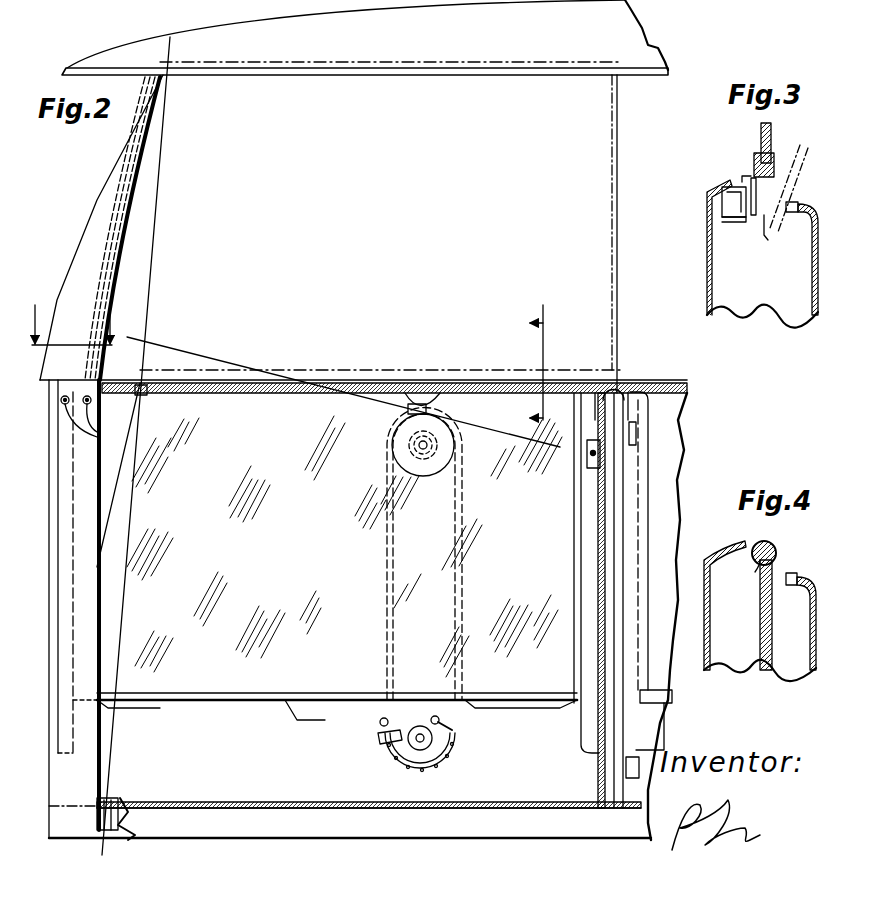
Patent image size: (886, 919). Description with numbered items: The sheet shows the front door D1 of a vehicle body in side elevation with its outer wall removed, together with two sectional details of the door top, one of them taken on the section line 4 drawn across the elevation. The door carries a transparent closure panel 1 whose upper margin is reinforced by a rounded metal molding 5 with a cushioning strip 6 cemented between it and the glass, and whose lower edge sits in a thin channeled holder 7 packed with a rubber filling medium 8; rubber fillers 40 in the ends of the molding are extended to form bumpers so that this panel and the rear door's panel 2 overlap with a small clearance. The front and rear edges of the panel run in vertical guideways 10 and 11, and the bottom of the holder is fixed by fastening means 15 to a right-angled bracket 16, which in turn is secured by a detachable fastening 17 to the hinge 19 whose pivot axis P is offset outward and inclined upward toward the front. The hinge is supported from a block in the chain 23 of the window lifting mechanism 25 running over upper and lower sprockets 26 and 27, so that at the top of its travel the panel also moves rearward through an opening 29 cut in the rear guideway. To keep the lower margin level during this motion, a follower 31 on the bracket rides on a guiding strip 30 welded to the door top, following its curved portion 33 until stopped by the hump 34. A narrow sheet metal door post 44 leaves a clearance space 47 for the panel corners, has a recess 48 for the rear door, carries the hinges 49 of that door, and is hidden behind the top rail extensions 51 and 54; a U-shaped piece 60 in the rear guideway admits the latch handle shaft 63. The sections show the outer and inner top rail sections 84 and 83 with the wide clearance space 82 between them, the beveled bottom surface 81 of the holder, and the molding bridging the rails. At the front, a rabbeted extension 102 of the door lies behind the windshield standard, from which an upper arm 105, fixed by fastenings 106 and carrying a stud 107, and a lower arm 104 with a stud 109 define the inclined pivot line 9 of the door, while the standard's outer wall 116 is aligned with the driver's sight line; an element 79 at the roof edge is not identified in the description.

In FIG. 2, the panel 1 is at (604, 178).
In FIG. 3, the panel 1 is at (773, 135).
In FIG. 4, the panel 1 is at (760, 620).
In FIG. 2, the panel 2 is at (672, 497).
In FIG. 2, the section line 4— 4 is at (536, 362).
In FIG. 2, the metal molding 5 is at (100, 207).
In FIG. 4, the metal molding 5 is at (775, 548).
In FIG. 4, the cushioning strip 6 is at (758, 572).
In FIG. 2, the channeled holder 7 is at (497, 380).
In FIG. 3, the channeled holder 7 is at (777, 165).
In FIG. 3, the filling medium 8 is at (756, 163).
In FIG. 2, the pivot line g—g 9 is at (134, 443).
In FIG. 2, the guideway 10 is at (66, 447).
In FIG. 2, the guideway 11 is at (581, 718).
In FIG. 3, the fastening means 15 is at (751, 178).
In FIG. 2, the right-angled bracket 16 is at (312, 722).
In FIG. 3, the right-angled bracket 16 is at (765, 228).
In FIG. 2, the detachable fastening 17 is at (380, 728).
In FIG. 2, the hinge 19 is at (386, 752).
In FIG. 2, the chain 23 is at (455, 748).
In FIG. 2, the window lifting mechanism 25 is at (390, 764).
In FIG. 2, the upper sprocket 26 is at (395, 455).
In FIG. 2, the lower sprocket 27 is at (428, 762).
In FIG. 2, the opening 29 is at (622, 400).
In FIG. 2, the guiding strip 30 is at (490, 402).
In FIG. 3, the guiding strip 30 is at (722, 200).
In FIG. 2, the follower 31 is at (462, 402).
In FIG. 3, the follower 31 is at (740, 220).
In FIG. 2, the curved portion 33 is at (420, 392).
In FIG. 2, the hump 34 is at (470, 394).
In FIG. 4, the rubber fillers 40 is at (778, 555).
In FIG. 2, the door post 44 is at (626, 768).
In FIG. 2, the clearance space 47 is at (618, 393).
In FIG. 2, the recess 48 is at (612, 487).
In FIG. 2, the hinges 49 is at (640, 430).
In FIG. 2, the top rail extension 51 is at (628, 395).
In FIG. 2, the top rail extension 54 is at (606, 385).
In FIG. 2, the U-shaped piece 60 is at (590, 466).
In FIG. 2, the latch handle shaft 63 is at (600, 490).
In FIG. 2, the lid 79 is at (626, 68).
In FIG. 2, the beveled surface 81 is at (160, 708).
In FIG. 4, the clearance space 82 is at (788, 580).
In FIG. 3, the inner section 83 is at (804, 209).
In FIG. 4, the inner section 83 is at (805, 578).
In FIG. 3, the outer section 84 is at (728, 182).
In FIG. 4, the outer section 84 is at (738, 541).
In FIG. 2, the extension 102 is at (50, 806).
In FIG. 2, the lower arm 104 is at (97, 838).
In FIG. 2, the upper arm 105 is at (108, 383).
In FIG. 2, the fastenings 106 is at (96, 421).
In FIG. 2, the stud 107 is at (134, 395).
In FIG. 2, the stud 109 is at (128, 840).
In FIG. 2, the outer wall 116 is at (115, 254).
In FIG. 2, the pivot axis p—p P is at (343, 391).
In FIG. 2, the front door D1 is at (510, 797).
In FIG. 3, the front door D1 is at (707, 266).
In FIG. 4, the front door D1 is at (710, 676).